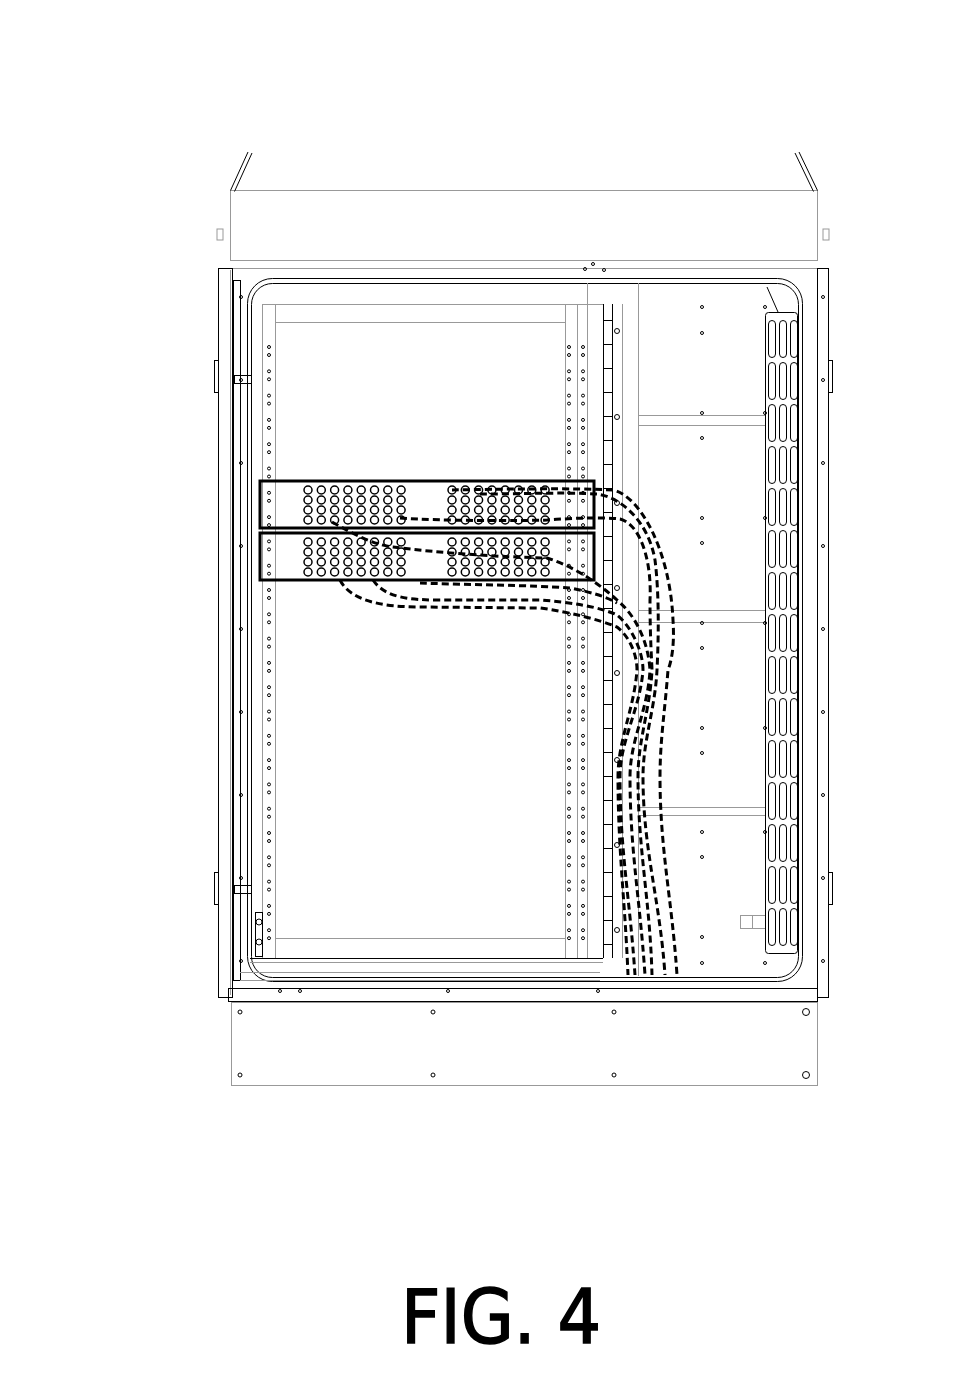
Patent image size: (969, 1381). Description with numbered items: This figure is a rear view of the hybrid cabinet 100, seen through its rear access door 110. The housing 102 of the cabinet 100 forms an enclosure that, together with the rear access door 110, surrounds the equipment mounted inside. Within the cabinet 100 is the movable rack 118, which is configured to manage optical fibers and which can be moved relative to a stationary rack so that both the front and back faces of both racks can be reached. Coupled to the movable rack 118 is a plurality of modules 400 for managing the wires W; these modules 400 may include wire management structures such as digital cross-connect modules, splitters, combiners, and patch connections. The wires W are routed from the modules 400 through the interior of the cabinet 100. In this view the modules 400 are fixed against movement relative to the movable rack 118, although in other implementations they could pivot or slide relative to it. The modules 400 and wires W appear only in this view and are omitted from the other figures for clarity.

The hybrid cabinet 100 is at (223, 90).
The housing 102 is at (227, 217).
The rear access door 110 is at (228, 347).
The movable rack 118 is at (265, 680).
The modules 400 is at (280, 503).
The wires W is at (502, 605).